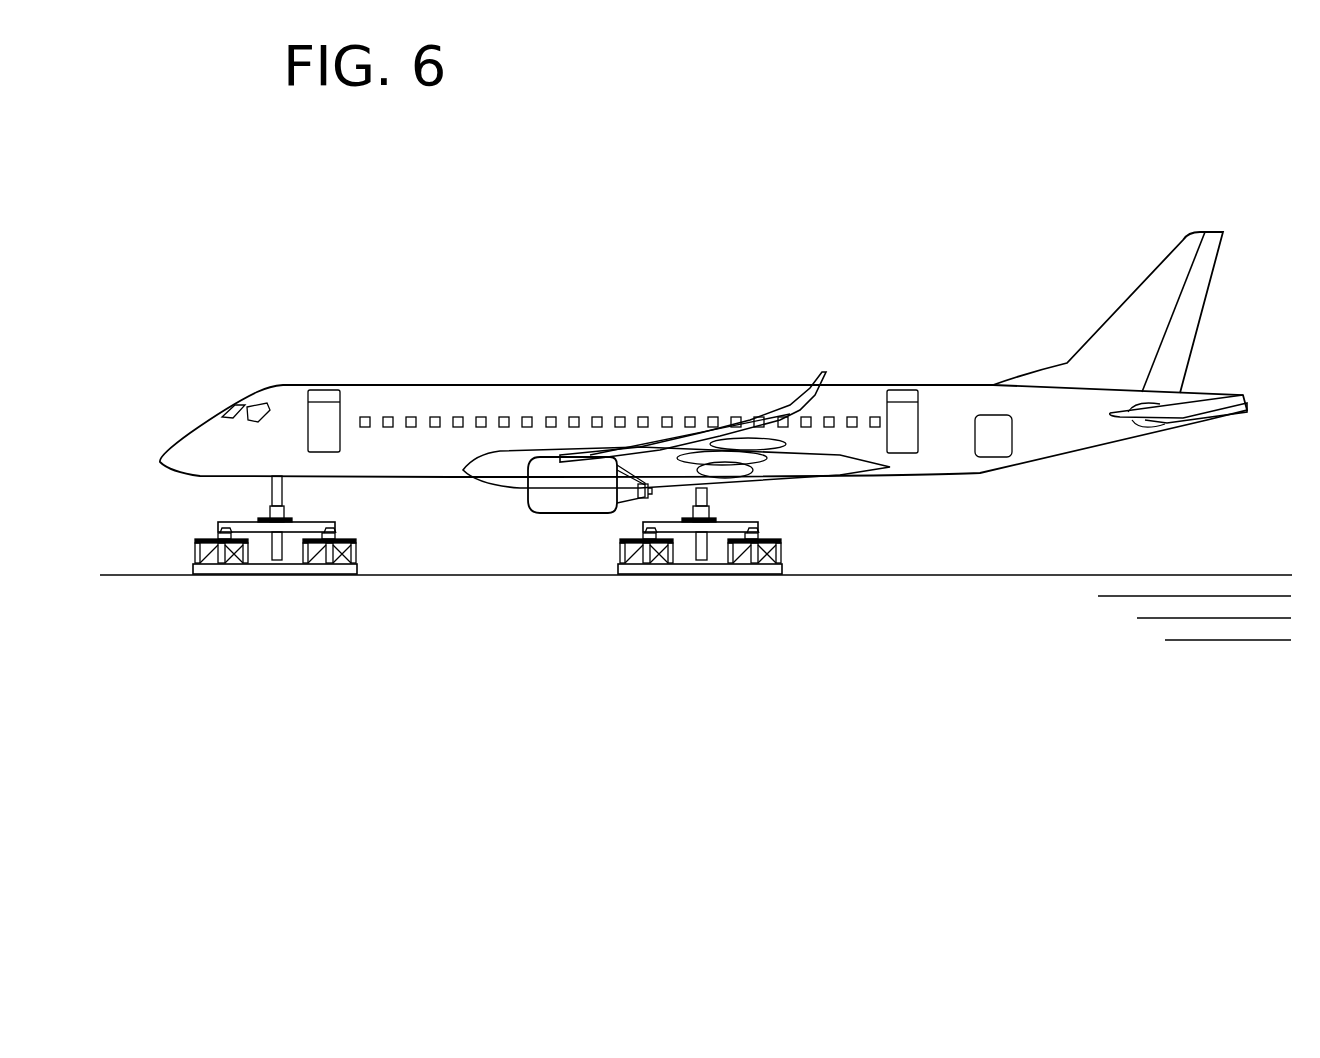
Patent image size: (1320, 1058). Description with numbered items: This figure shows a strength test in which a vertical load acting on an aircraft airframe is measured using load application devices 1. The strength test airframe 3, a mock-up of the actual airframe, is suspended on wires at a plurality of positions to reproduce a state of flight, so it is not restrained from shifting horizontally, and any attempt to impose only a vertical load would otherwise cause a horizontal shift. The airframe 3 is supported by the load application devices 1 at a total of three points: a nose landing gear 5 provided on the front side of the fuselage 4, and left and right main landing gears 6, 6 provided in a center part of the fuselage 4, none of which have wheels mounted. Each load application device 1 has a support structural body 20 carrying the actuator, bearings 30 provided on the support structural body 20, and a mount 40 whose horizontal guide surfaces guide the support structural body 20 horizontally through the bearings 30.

The load application device 1 is at (490, 527).
The strength test airframe 3 is at (703, 396).
The fuselage 4 is at (666, 384).
The nose landing gear 5 is at (284, 488).
The main landing gear 6 is at (708, 498).
The support structural body 20 is at (335, 526).
The bearing 30 is at (336, 535).
The mount 40 is at (356, 555).